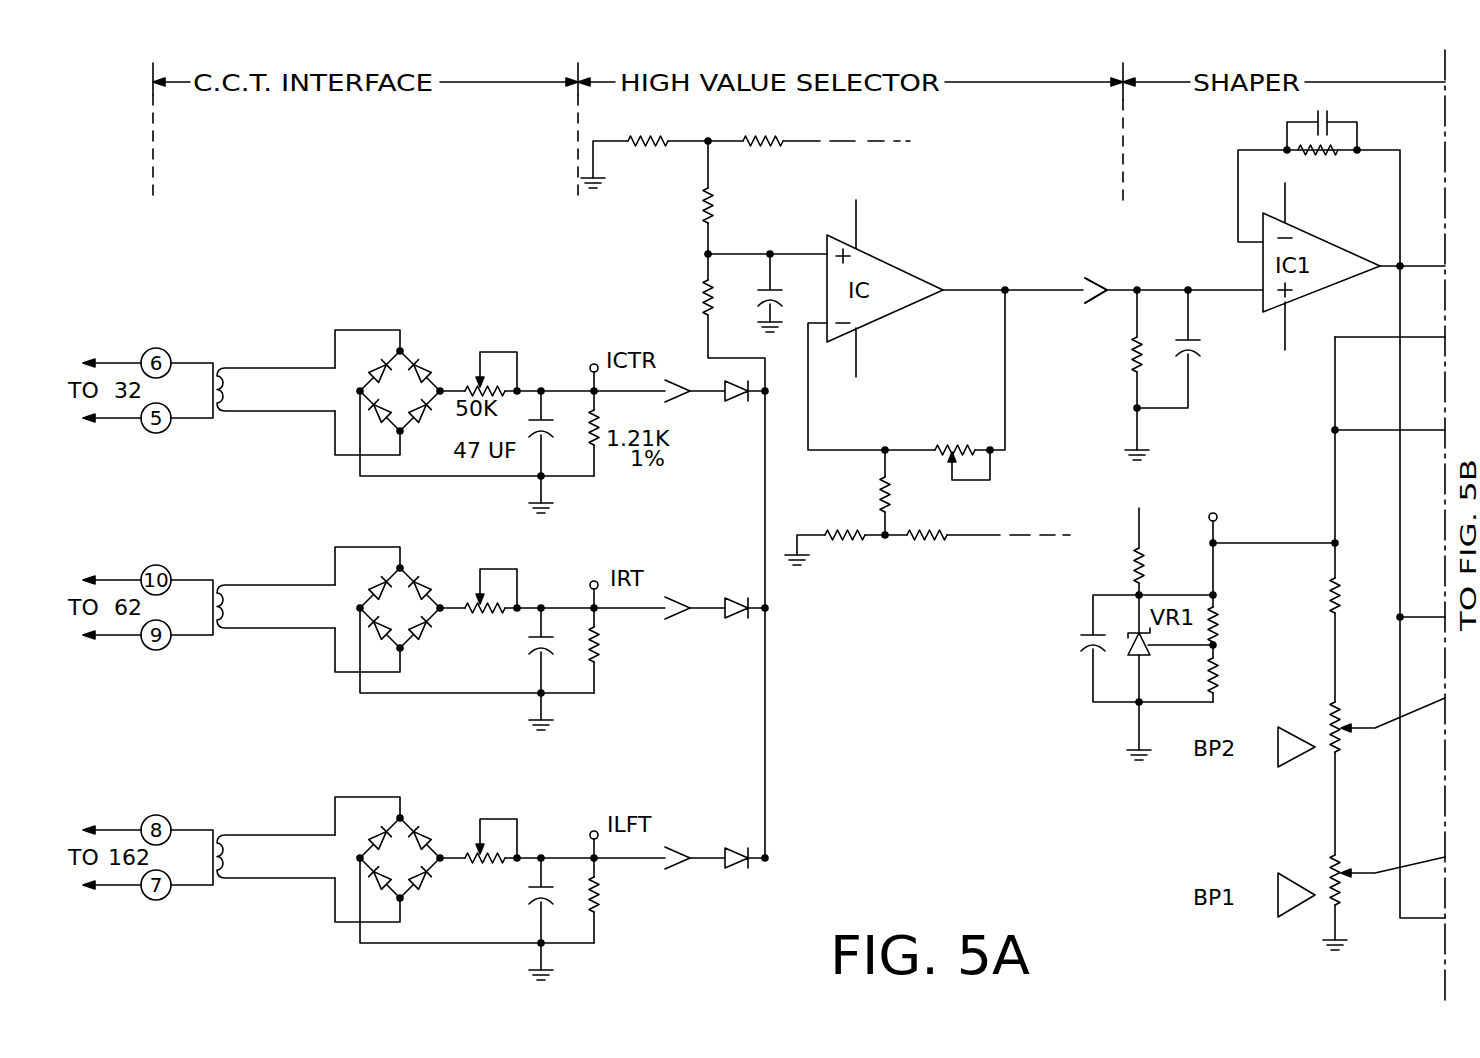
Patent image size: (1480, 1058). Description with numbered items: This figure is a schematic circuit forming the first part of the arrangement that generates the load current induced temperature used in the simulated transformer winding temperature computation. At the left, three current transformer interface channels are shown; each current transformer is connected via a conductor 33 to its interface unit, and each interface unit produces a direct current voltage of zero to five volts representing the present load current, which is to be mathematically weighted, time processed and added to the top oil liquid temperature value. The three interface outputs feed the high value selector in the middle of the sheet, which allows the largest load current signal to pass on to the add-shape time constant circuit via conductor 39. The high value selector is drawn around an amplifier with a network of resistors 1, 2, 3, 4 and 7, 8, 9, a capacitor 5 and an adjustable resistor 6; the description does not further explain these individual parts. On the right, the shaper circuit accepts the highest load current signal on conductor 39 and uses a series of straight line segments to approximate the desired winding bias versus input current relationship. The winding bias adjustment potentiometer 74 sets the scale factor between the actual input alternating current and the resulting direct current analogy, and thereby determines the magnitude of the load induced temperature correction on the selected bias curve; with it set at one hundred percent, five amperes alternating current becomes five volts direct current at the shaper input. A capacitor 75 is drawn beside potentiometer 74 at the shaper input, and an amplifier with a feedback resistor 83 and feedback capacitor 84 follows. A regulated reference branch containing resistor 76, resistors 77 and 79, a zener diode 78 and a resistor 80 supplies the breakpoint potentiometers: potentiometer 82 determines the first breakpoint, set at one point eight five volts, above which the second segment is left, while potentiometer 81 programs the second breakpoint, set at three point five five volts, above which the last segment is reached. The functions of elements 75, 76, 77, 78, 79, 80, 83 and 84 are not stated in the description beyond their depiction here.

The resistor 1 is at (648, 157).
The resistor 2 is at (763, 157).
The resistor 3 is at (721, 205).
The resistor 4 is at (721, 297).
The capacitor 5 is at (782, 293).
The variable gain resistor 6 is at (962, 451).
The resistor 7 is at (871, 494).
The resistor 8 is at (845, 551).
The resistor 9 is at (927, 551).
The conductor 33 is at (265, 370).
The conductor 39 is at (1120, 288).
The winding bias adjustment potentiometer 74 is at (1132, 347).
The capacitor 75 is at (1205, 345).
The resistor 76 is at (1133, 557).
The resistor 77 is at (1220, 617).
The zener diode 78 is at (1146, 656).
The resistor 79 is at (1220, 671).
The resistor 80 is at (1304, 595).
The potentiometer 81 is at (1325, 725).
The potentiometer 82 is at (1325, 868).
The feedback resistor 83 is at (1308, 156).
The feedback capacitor 84 is at (1318, 112).